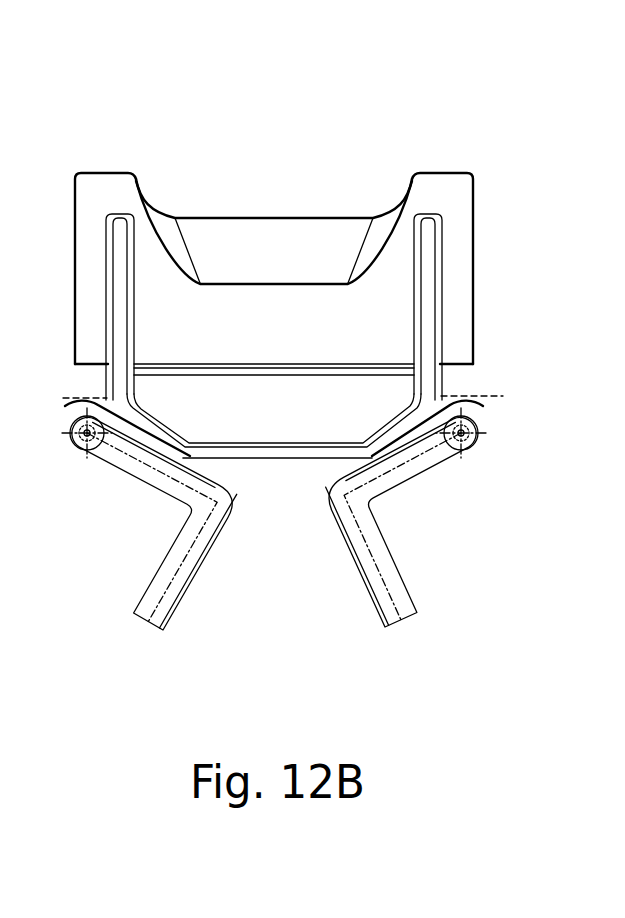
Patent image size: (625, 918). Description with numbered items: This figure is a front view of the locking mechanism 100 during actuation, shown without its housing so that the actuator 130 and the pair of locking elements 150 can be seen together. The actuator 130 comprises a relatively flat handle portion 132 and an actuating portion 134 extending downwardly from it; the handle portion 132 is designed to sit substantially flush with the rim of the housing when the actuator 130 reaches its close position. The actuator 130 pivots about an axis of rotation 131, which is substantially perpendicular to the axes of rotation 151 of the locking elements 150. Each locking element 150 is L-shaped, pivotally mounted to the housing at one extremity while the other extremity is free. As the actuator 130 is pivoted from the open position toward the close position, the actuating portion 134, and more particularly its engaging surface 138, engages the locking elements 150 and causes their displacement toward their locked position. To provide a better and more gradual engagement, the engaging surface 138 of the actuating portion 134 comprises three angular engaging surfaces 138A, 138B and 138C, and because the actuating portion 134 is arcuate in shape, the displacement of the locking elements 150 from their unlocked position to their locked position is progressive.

The locking mechanism 100 is at (301, 331).
The actuator 130 is at (301, 366).
The axis of rotation 131 is at (64, 397).
The handle portion 132 is at (456, 290).
The actuating portion 134 is at (428, 380).
The engaging surface 138 is at (291, 513).
The angular engaging surface 138A is at (313, 462).
The angular engaging surface 138B is at (63, 418).
The angular engaging surface 138C is at (448, 452).
The locking elements 150 is at (131, 561).
The axes of rotation 151 is at (91, 452).